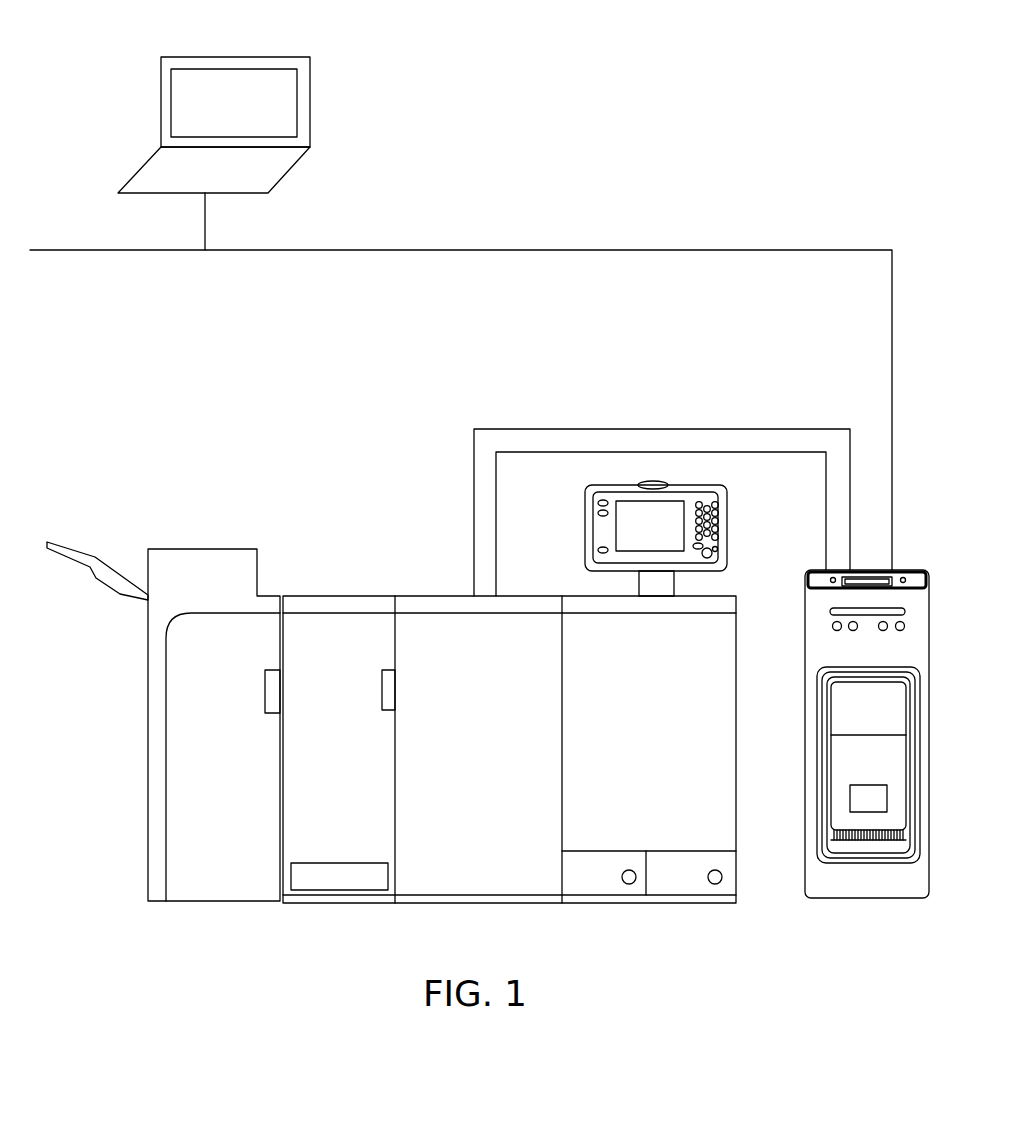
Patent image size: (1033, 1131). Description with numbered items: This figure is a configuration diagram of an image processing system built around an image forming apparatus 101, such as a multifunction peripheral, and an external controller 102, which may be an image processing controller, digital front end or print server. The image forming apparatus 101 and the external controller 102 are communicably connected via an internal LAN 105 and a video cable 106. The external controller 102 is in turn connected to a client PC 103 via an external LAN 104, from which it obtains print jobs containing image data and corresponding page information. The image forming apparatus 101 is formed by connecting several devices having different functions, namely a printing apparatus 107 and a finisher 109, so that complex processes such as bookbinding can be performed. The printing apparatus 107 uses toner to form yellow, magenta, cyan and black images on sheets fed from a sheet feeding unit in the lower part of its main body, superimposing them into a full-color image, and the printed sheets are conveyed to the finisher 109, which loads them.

The image forming apparatus 101 is at (357, 533).
The external controller 102 is at (909, 571).
The client PC 103 is at (276, 44).
The external LAN 104 is at (686, 249).
The internal LAN 105 is at (765, 453).
The video cable 106 is at (802, 428).
The printing apparatus 107 is at (688, 904).
The finisher 109 is at (243, 903).